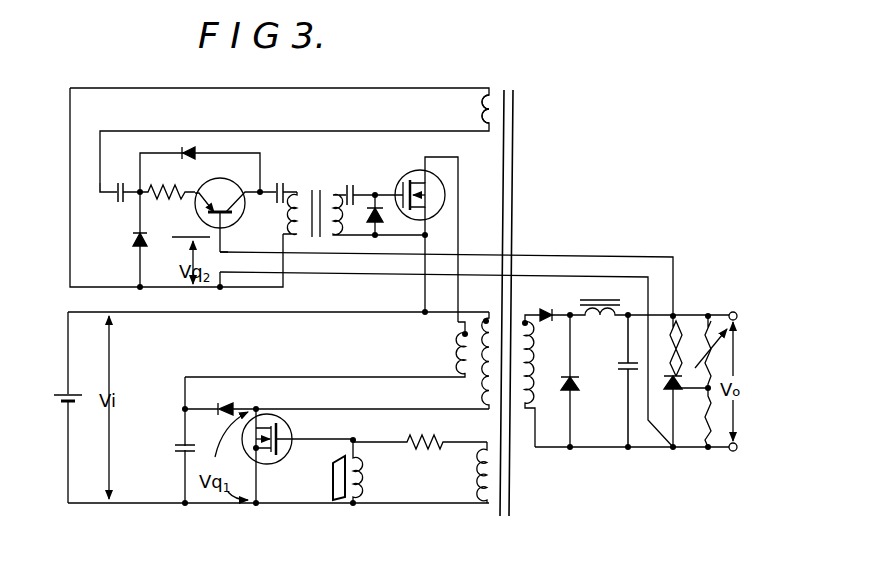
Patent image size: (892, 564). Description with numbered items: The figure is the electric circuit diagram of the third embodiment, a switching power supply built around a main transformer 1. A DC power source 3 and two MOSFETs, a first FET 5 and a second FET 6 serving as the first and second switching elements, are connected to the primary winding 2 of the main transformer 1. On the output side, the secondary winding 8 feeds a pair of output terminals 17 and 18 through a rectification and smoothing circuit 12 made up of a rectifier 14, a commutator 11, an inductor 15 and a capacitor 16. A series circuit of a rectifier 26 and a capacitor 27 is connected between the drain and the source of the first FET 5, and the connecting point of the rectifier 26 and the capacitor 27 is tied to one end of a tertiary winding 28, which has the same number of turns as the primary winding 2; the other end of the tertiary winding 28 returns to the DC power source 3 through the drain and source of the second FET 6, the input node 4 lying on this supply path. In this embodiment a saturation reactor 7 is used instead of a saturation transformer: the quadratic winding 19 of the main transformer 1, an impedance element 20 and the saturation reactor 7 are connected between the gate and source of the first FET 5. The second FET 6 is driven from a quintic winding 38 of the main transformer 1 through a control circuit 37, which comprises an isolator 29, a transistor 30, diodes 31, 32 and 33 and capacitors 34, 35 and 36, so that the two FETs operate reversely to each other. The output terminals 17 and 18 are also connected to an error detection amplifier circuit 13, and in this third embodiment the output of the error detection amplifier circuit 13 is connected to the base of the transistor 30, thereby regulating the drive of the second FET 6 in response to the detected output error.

The main transformer 1 is at (510, 172).
The primary winding 2 is at (485, 317).
The DC power source 3 is at (76, 400).
The input node 4 is at (181, 381).
The first FET 5 is at (292, 433).
The second FET 6 is at (418, 172).
The saturation reactor 7 is at (358, 461).
The secondary winding 8 is at (528, 354).
The commutator 11 is at (566, 384).
The rectification and smoothing circuit 12 is at (677, 254).
The error detection amplifier circuit 13 is at (664, 453).
The rectifier 14 is at (546, 307).
The inductor 15 is at (618, 309).
The capacitor 16 is at (620, 368).
The output terminal 17 is at (731, 311).
The output terminal 18 is at (733, 452).
The quadratic winding 19 is at (480, 506).
The impedance element 20 is at (419, 446).
The rectifier 26 is at (229, 403).
The capacitor 27 is at (181, 447).
The tertiary winding 28 is at (458, 352).
The isolator 29 is at (314, 191).
The transistor 30 is at (227, 182).
The diode 31 is at (370, 232).
The diode 32 is at (186, 148).
The diode 33 is at (136, 245).
The capacitor 34 is at (350, 186).
The capacitor 35 is at (283, 183).
The capacitor 36 is at (120, 199).
The control circuit 37 is at (140, 110).
The quintic winding 38 is at (485, 101).